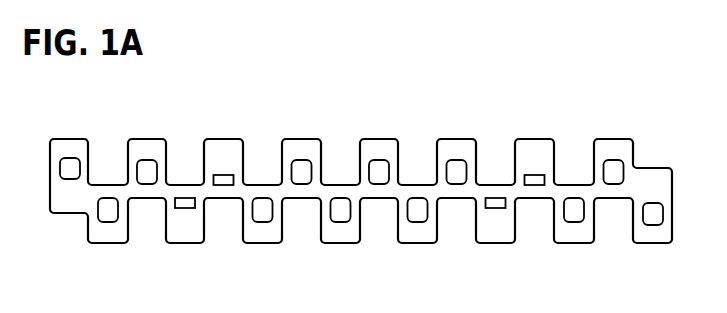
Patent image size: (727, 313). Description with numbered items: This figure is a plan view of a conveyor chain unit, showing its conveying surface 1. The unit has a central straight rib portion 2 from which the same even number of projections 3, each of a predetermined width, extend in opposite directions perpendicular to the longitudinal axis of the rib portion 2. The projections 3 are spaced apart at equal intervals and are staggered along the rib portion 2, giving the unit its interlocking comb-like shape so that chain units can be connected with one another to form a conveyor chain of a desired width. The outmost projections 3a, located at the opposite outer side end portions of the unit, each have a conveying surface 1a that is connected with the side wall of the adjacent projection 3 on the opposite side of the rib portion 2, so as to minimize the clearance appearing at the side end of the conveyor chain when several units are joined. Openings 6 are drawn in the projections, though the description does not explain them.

The conveying surface 1 is at (150, 153).
The conveying surface of outmost projection 1a is at (70, 203).
The central straight rib portion 2 is at (108, 185).
The projections 3 is at (138, 139).
The outmost projections 3a is at (354, 184).
The through hole 6 is at (377, 177).